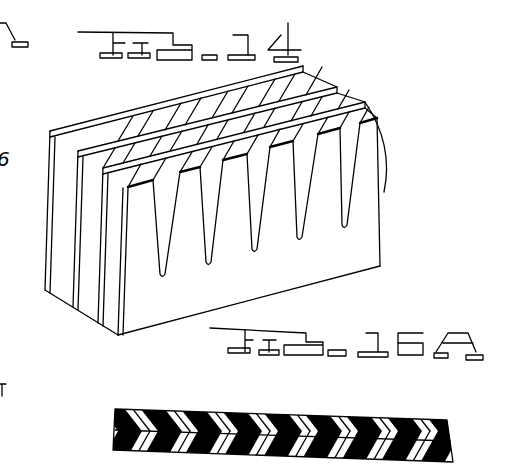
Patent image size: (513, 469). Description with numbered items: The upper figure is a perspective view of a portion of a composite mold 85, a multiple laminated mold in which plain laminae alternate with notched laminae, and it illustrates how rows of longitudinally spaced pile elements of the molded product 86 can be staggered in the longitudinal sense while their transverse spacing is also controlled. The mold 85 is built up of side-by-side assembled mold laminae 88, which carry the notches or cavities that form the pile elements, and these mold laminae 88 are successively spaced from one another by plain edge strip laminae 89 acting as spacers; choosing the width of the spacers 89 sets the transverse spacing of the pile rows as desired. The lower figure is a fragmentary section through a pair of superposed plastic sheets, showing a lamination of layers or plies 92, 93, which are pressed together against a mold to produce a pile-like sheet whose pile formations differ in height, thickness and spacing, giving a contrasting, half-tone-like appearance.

In FIG. 14, the composite mold 85 is at (389, 228).
In FIG. 14, the product 86 is at (137, 317).
In FIG. 14, the mold laminae 88 is at (67, 222).
In FIG. 14, the plain edge strip laminae 89 is at (97, 295).
In FIG. 15A, the ply 92 is at (233, 421).
In FIG. 15A, the ply 93 is at (322, 421).